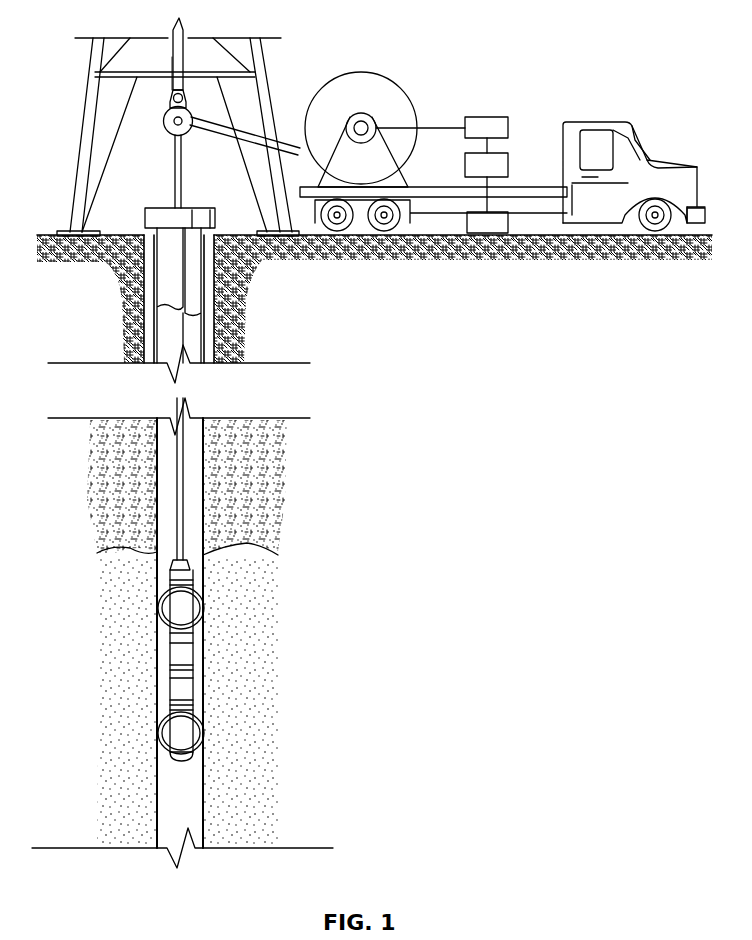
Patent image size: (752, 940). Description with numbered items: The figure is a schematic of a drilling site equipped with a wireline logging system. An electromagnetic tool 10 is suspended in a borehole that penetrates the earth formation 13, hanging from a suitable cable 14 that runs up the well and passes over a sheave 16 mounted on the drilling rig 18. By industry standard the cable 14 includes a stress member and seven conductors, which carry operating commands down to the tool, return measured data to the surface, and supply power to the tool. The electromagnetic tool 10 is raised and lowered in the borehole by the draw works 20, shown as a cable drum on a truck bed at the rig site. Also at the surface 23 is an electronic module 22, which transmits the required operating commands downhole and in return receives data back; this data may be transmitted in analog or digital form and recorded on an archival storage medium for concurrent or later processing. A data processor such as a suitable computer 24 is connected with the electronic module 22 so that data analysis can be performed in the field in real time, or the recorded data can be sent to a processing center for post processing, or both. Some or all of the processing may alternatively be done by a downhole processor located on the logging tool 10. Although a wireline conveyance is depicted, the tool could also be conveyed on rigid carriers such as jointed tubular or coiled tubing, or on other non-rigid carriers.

The electromagnetic tool 10 is at (195, 658).
The earth formation 13 is at (323, 507).
The cable 14 is at (173, 173).
The sheave 16 is at (163, 121).
The drilling rig 18 is at (88, 77).
The draw works 20 is at (358, 73).
The electronic module 22 is at (505, 117).
The surface 23 is at (53, 234).
The computer 24 is at (506, 153).